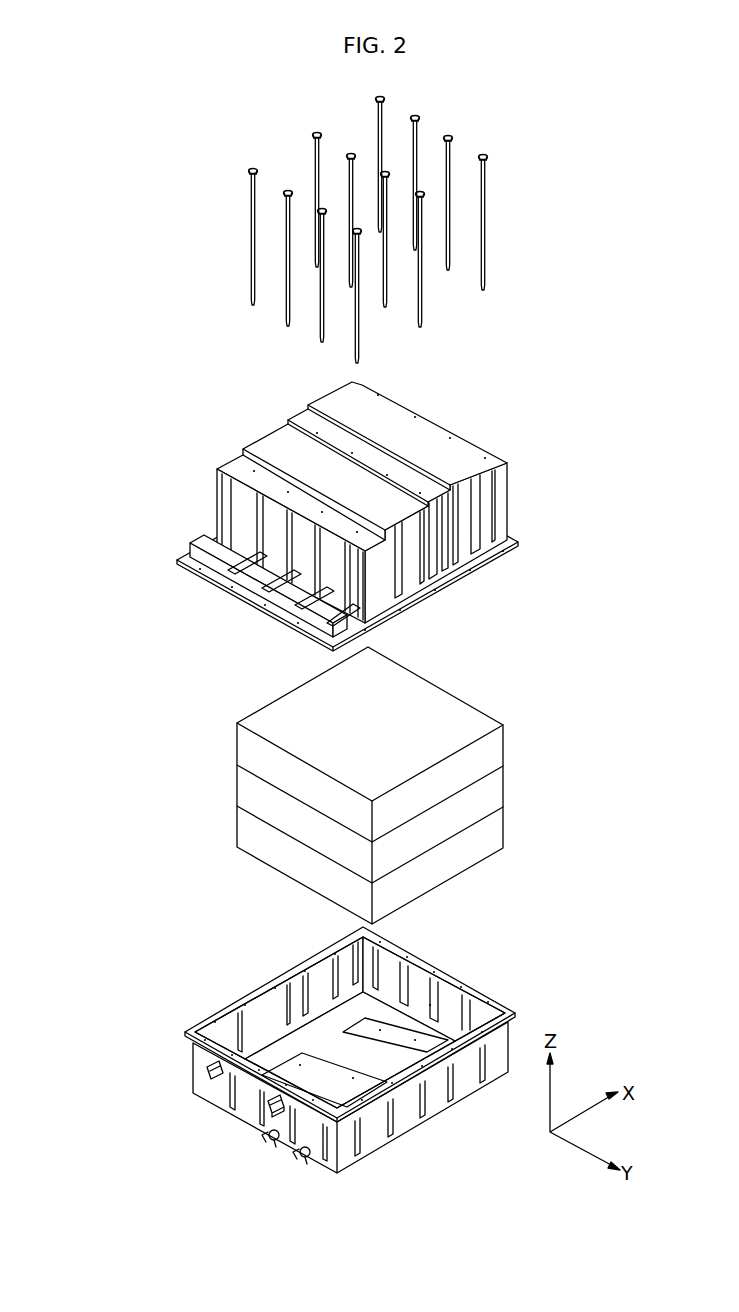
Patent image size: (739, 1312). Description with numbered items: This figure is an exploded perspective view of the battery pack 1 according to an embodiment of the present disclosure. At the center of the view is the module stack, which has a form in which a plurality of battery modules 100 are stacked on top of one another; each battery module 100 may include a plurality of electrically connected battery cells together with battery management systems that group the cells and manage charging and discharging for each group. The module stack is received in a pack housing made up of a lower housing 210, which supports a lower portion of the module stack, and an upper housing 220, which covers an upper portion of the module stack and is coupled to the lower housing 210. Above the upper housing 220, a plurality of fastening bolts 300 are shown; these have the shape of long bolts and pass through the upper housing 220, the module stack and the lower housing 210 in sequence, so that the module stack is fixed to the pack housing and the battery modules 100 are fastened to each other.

The battery pack 1 is at (133, 278).
The fastening bolt 300 is at (253, 168).
The upper housing 220 is at (482, 452).
The battery module 100 is at (496, 754).
The lower housing 210 is at (343, 1147).